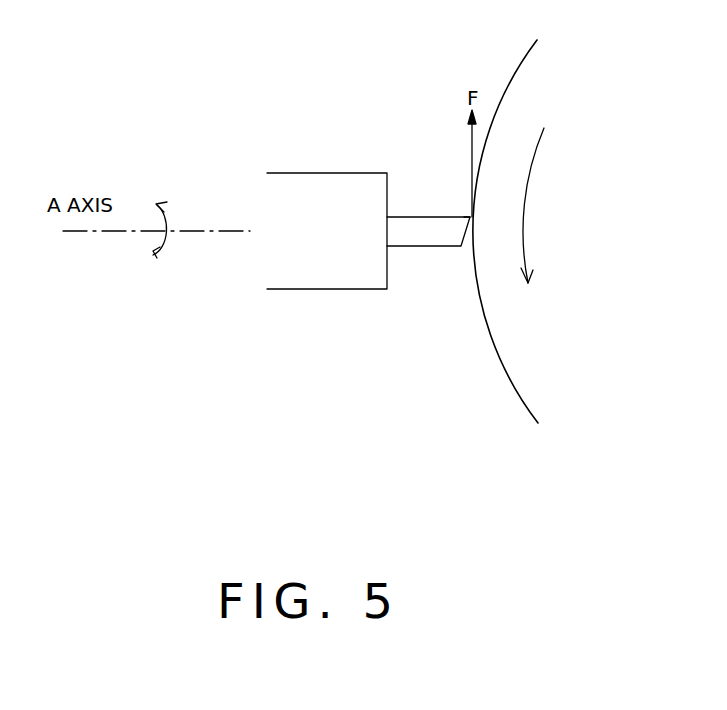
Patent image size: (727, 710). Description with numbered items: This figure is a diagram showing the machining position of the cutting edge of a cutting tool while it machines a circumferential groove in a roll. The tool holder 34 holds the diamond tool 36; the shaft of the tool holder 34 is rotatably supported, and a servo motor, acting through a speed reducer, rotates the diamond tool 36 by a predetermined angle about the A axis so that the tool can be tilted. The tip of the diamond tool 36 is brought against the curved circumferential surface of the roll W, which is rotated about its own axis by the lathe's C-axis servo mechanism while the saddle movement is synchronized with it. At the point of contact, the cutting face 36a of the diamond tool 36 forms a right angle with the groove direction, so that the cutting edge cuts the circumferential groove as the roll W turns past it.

The tool holder 34 is at (303, 185).
The diamond tool 36 is at (432, 237).
The cutting face 36a is at (470, 217).
The roll W is at (550, 377).